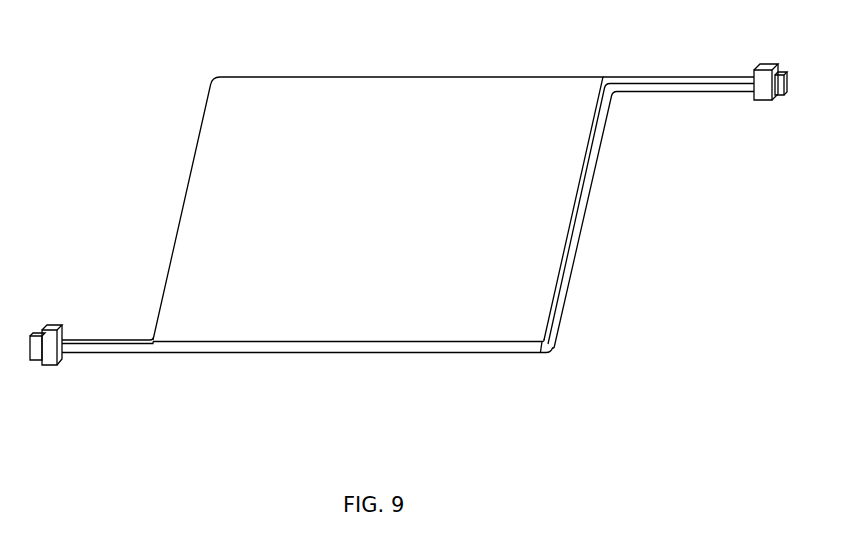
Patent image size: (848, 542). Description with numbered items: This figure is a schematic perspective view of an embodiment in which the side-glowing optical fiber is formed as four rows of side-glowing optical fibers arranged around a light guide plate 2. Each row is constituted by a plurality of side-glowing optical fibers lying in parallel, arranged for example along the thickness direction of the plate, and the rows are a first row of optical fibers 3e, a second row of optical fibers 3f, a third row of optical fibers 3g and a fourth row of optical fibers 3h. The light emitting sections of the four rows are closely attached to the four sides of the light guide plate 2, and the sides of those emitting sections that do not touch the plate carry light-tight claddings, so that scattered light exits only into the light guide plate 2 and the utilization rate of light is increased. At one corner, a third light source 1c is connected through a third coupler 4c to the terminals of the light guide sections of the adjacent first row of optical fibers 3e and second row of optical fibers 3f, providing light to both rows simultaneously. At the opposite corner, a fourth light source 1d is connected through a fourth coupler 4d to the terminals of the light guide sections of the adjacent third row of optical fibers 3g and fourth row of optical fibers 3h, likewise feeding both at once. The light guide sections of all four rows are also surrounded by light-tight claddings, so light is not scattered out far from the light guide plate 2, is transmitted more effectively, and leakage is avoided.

The light guide plate 2 is at (508, 128).
The first row of optical fibers 3e is at (640, 78).
The second row of optical fibers 3f is at (692, 87).
The third row of optical fibers 3g is at (115, 343).
The fourth row of optical fibers 3h is at (172, 349).
The third coupler 4c is at (759, 82).
The fourth coupler 4d is at (50, 348).
The third light source 1c is at (780, 78).
The fourth light source 1d is at (37, 346).